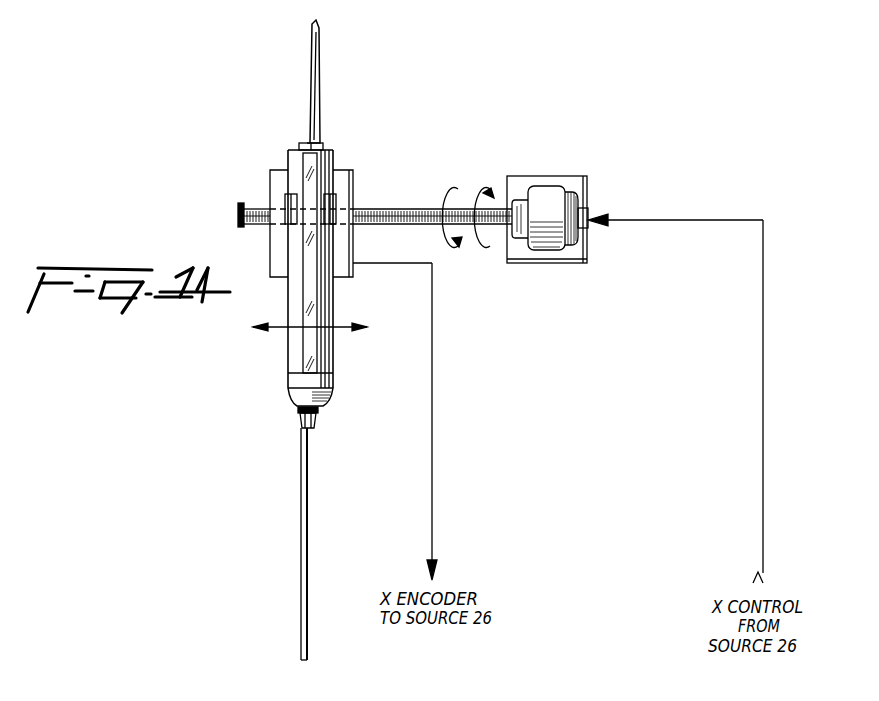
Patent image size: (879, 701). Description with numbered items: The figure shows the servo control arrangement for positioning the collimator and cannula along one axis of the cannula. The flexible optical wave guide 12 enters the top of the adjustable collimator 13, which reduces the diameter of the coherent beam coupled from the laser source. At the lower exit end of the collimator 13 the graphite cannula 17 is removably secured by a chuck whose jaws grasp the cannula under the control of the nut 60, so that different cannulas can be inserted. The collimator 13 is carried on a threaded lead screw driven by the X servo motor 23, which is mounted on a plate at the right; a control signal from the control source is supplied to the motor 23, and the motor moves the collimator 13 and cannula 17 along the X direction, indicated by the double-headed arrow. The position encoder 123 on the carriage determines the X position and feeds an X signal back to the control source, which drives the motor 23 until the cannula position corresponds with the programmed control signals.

The optical wave guide 12 is at (318, 100).
The collimator 13 is at (288, 353).
The cannula 17 is at (302, 510).
The X servo motor 23 is at (562, 190).
The nut 60 is at (297, 411).
The position encoder 123 is at (354, 196).